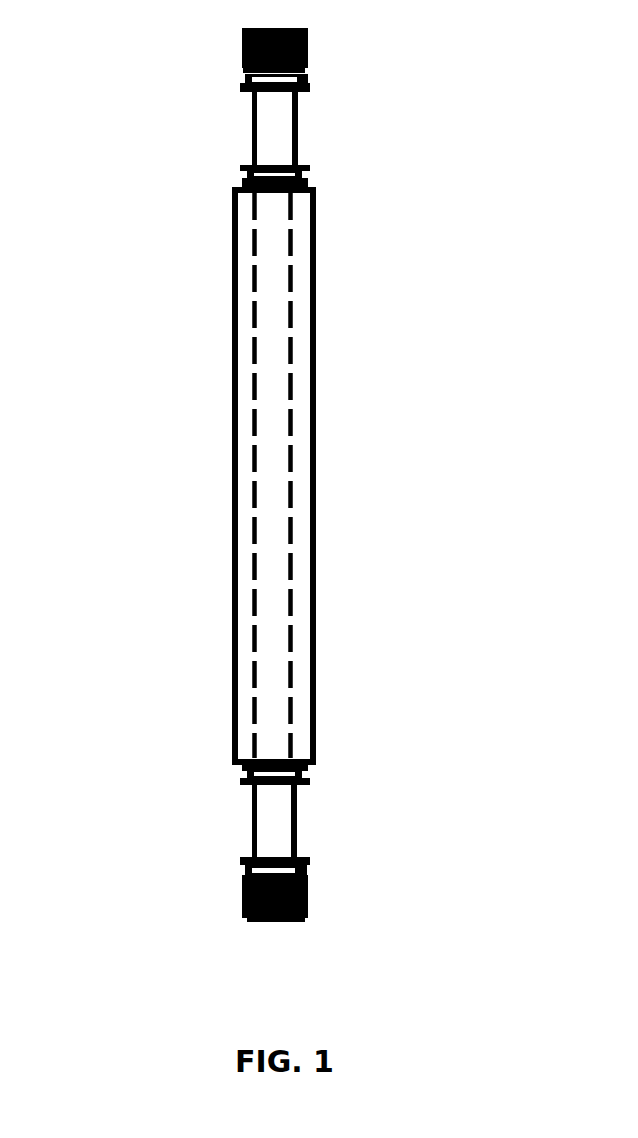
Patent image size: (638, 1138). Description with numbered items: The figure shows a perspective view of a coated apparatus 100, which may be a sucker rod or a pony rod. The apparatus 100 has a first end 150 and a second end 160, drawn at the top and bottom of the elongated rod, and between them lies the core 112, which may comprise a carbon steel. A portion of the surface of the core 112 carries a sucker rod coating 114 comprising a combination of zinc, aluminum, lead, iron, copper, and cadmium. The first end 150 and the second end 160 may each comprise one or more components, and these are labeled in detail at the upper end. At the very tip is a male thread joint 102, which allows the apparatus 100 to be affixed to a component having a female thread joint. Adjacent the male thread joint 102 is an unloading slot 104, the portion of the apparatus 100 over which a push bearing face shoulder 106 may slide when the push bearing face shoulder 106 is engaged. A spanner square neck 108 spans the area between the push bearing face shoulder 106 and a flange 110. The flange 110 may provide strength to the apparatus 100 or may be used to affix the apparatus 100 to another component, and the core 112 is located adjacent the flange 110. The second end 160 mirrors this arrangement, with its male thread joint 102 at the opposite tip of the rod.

The coated apparatus 100 is at (360, 293).
The male thread joint 102 is at (240, 50).
The unloading slot 104 is at (244, 80).
The push bearing face shoulder 106 is at (247, 88).
The spanner square neck 108 is at (268, 125).
The flange 110 is at (243, 170).
The core 112 is at (268, 420).
The sucker rod coating 114 is at (233, 628).
The first end 150 is at (353, 57).
The second end 160 is at (362, 883).